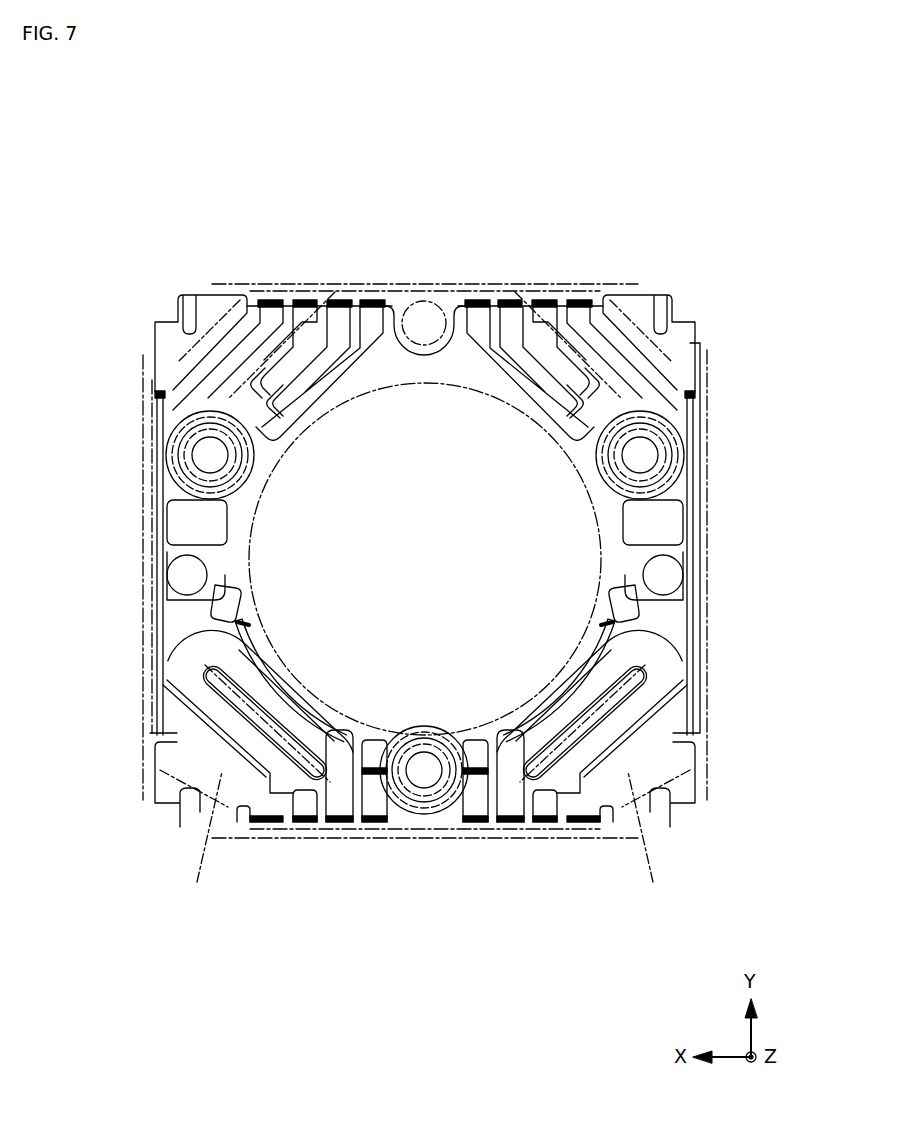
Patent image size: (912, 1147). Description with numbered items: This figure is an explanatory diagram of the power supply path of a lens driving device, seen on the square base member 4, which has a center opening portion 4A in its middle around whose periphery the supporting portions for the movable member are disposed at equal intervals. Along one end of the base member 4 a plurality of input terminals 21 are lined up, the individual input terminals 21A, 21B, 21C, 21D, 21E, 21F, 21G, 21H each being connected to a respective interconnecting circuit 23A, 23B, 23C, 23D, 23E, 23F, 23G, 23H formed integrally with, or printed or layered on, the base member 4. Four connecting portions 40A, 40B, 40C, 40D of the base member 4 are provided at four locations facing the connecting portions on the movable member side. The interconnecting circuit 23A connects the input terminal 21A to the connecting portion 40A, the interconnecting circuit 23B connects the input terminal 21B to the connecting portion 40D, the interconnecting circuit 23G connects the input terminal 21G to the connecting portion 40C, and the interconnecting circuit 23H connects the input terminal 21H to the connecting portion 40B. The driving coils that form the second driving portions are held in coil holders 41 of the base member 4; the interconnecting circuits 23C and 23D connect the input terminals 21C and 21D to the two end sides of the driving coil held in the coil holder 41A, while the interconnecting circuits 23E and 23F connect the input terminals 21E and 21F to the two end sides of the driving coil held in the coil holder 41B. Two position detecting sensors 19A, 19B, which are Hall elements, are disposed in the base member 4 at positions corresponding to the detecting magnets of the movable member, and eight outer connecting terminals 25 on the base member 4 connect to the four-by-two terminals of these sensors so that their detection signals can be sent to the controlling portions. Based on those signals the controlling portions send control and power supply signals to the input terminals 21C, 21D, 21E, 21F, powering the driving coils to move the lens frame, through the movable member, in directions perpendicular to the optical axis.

The base member 4 is at (708, 458).
The center opening portion 4A is at (598, 514).
The position detecting sensor 19A is at (240, 302).
The position detecting sensor 19B is at (610, 302).
The input terminals 21 is at (405, 912).
The input terminal 21A is at (578, 830).
The input terminal 21B is at (544, 830).
The input terminal 21C is at (508, 830).
The input terminal 21D is at (476, 830).
The input terminal 21E is at (374, 830).
The input terminal 21F is at (342, 830).
The input terminal 21G is at (306, 830).
The input terminal 21H is at (283, 830).
The interconnecting circuit 23A is at (608, 826).
The interconnecting circuit 23B is at (690, 628).
The interconnecting circuit 23C is at (565, 680).
The interconnecting circuit 23D is at (472, 738).
The interconnecting circuit 23E is at (375, 738).
The interconnecting circuit 23F is at (300, 688).
The interconnecting circuit 23G is at (160, 617).
The interconnecting circuit 23H is at (242, 826).
The outer connecting terminals 25 is at (385, 272).
The connecting portion 40A is at (669, 826).
The connecting portion 40B is at (181, 826).
The connecting portion 40C is at (162, 320).
The connecting portion 40D is at (688, 320).
The coil holder 41 is at (427, 837).
The coil holder 41A is at (658, 837).
The coil holder 41B is at (196, 837).